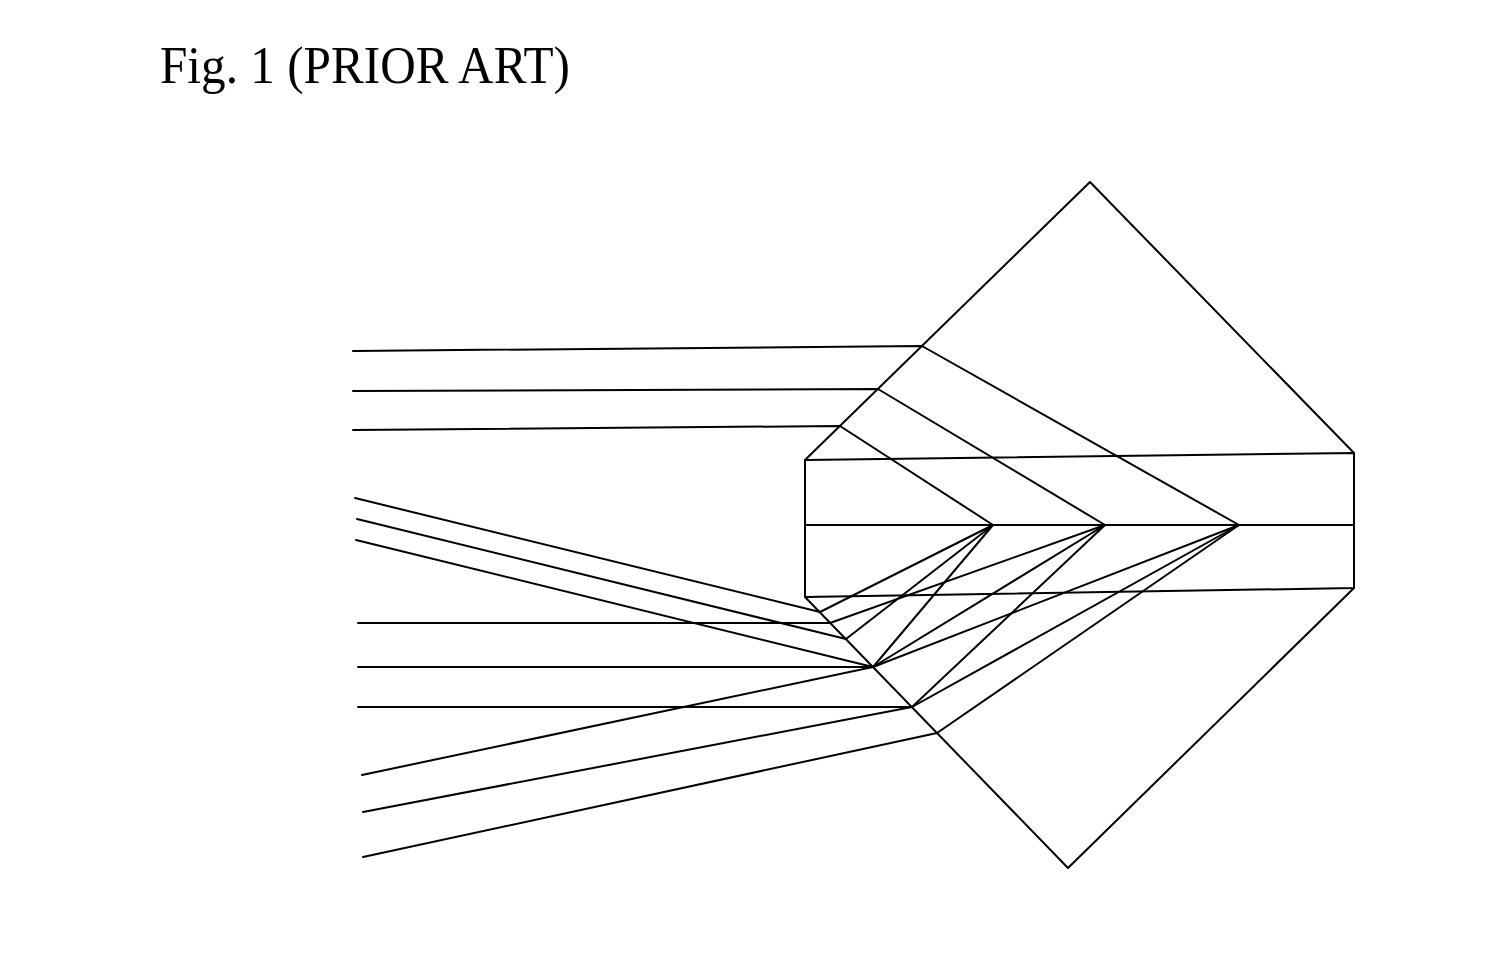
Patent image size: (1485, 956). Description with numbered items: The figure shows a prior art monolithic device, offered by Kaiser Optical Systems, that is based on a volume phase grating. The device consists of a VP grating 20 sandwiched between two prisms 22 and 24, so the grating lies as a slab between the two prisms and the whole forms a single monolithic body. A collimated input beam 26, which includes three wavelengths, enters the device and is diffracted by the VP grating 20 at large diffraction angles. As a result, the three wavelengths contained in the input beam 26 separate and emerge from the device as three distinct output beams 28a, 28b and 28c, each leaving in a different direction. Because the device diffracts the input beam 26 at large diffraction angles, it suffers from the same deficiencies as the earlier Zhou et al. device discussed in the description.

The VP grating 20 is at (1140, 525).
The prism 22 is at (1104, 327).
The prism 24 is at (1092, 767).
The collimated input beam 26 is at (355, 445).
The output beam 28a is at (362, 477).
The output beam 28b is at (358, 612).
The output beam 28c is at (358, 763).